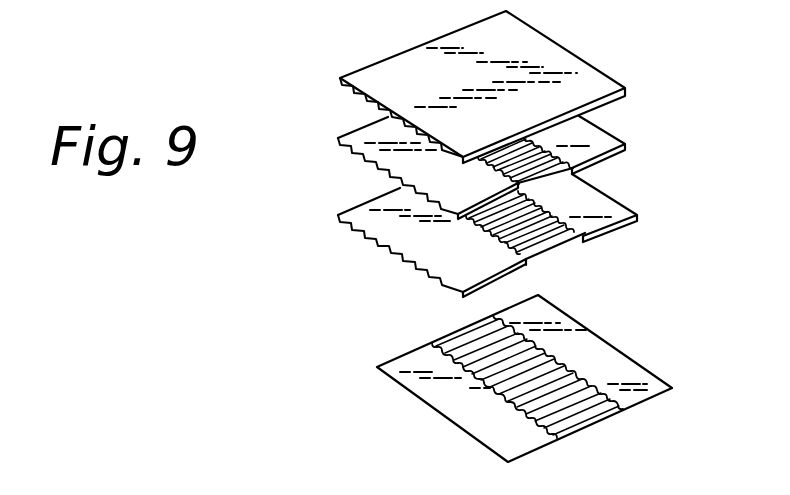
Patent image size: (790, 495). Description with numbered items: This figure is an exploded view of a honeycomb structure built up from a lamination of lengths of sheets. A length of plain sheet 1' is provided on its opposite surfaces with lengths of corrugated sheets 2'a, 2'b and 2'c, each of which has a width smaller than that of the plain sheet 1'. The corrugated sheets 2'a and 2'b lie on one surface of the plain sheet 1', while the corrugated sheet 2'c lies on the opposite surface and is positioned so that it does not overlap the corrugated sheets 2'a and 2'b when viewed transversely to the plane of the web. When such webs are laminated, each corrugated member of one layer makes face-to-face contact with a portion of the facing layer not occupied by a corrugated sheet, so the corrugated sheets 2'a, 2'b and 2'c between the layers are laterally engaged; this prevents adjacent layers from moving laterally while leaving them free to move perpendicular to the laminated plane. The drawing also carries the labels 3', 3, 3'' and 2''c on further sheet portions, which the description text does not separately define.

The plain sheet 1' is at (485, 82).
The left flat portion of intermediate sheet 3' is at (395, 168).
The corrugated intermediate sheet 3 is at (572, 168).
The right flat portion of intermediate sheet 3'' is at (623, 141).
The corrugated sheet 2'b is at (432, 251).
The corrugated sheet 2'c is at (569, 252).
The corrugated sheet 2'a is at (631, 221).
The corrugated portion of separate lower sheet 2''c is at (549, 391).